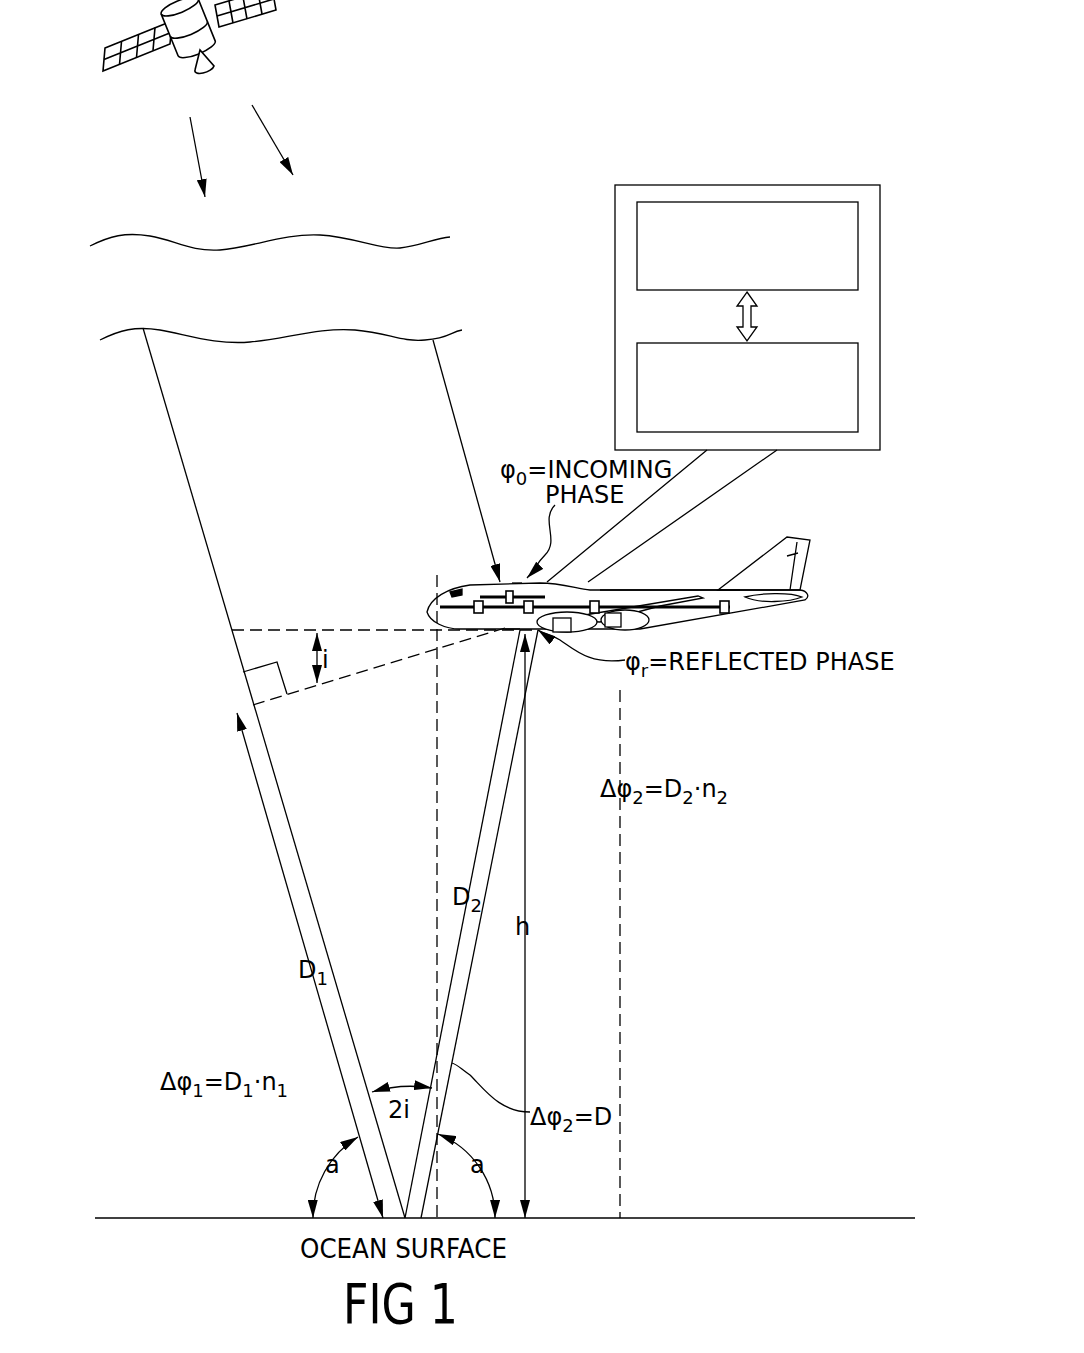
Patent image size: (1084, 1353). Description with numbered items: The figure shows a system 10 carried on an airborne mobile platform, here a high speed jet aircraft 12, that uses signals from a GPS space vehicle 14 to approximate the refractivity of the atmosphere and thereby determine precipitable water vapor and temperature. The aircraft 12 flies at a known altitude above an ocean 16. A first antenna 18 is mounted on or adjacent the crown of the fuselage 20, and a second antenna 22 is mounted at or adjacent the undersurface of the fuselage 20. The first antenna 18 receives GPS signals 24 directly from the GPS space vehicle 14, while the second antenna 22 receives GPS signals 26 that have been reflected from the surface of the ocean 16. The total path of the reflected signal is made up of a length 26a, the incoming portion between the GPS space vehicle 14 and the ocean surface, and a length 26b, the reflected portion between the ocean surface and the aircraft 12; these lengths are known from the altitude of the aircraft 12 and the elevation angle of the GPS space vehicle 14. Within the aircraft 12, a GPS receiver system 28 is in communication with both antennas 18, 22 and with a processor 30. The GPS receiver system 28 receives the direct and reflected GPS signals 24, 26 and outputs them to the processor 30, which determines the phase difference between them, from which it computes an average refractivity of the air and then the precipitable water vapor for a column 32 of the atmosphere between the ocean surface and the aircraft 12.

The system 10 is at (713, 335).
The jet aircraft 12 is at (662, 549).
The GPS space vehicle 14 is at (215, 35).
The ocean 16 is at (275, 1218).
The first antenna 18 is at (517, 583).
The fuselage 20 is at (668, 590).
The second antenna 22 is at (512, 632).
The GPS signals 24 is at (272, 128).
The reflected GPS signals 26 is at (197, 157).
The incoming GPS signal length 26a is at (280, 792).
The reflected signal portion 26b is at (468, 1003).
The GPS receiver system 28 is at (701, 343).
The processor 30 is at (780, 290).
The column of atmosphere 32 is at (625, 910).